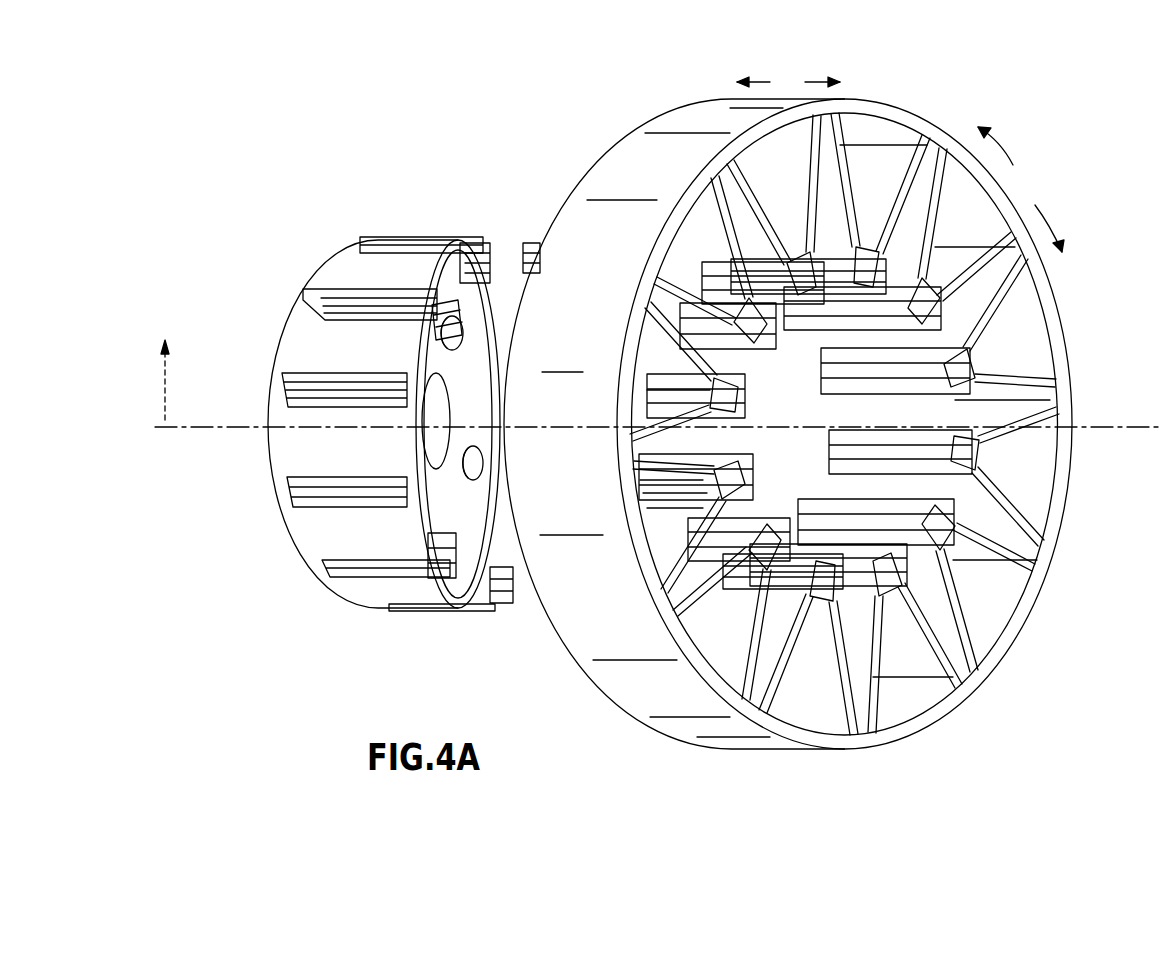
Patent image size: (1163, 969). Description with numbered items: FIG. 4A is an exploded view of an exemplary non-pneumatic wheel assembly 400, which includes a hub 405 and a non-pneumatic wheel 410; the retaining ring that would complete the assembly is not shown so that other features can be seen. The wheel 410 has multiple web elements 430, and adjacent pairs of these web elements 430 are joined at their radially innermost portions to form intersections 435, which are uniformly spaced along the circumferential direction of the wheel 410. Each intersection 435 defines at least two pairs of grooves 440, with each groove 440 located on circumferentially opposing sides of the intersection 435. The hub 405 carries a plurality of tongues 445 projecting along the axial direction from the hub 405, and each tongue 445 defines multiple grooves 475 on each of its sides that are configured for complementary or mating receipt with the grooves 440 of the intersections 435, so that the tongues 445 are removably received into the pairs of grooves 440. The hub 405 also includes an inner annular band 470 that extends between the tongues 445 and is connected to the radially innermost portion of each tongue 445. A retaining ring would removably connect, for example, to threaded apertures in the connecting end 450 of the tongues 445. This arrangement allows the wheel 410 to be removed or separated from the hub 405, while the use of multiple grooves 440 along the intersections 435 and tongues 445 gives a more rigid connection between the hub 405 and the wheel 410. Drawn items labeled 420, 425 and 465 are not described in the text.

The non-pneumatic wheel assembly 400 is at (469, 126).
The hub 405 is at (302, 540).
The non-pneumatic wheel 410 is at (925, 103).
The stator housing 420 is at (633, 685).
The housing front face ring 425 is at (619, 163).
The web elements 430 is at (715, 245).
The intersections 435 is at (975, 360).
The grooves 440 is at (937, 307).
The tongues 445 is at (335, 330).
The connecting end 450 is at (500, 236).
The end plate holes 465 is at (460, 470).
The inner annular band 470 is at (322, 392).
The grooves 475 is at (420, 358).